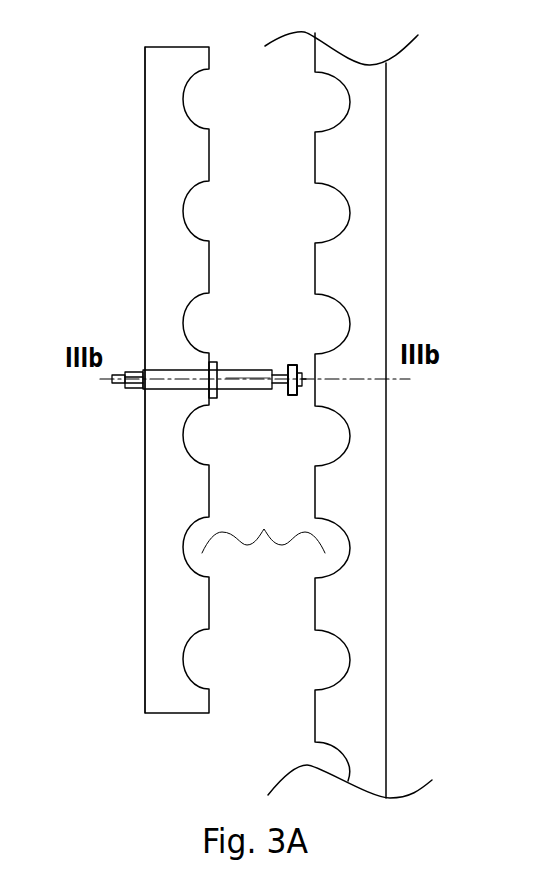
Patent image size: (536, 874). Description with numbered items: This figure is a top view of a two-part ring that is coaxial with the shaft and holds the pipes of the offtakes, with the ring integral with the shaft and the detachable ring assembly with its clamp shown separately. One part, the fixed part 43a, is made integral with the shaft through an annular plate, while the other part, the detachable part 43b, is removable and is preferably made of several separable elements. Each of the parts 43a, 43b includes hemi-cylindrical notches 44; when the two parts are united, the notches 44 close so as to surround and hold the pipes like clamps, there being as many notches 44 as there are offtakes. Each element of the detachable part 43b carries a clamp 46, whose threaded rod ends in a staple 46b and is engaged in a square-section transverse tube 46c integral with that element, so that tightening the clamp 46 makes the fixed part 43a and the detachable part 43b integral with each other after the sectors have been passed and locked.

The fixed part of the ring 43a is at (370, 198).
The detachable part of the ring 43b is at (168, 223).
The hemi-cylindrical notches 44 is at (263, 528).
The clamp 46 is at (184, 377).
The staple 46b is at (162, 368).
The transverse tube 46c is at (295, 362).